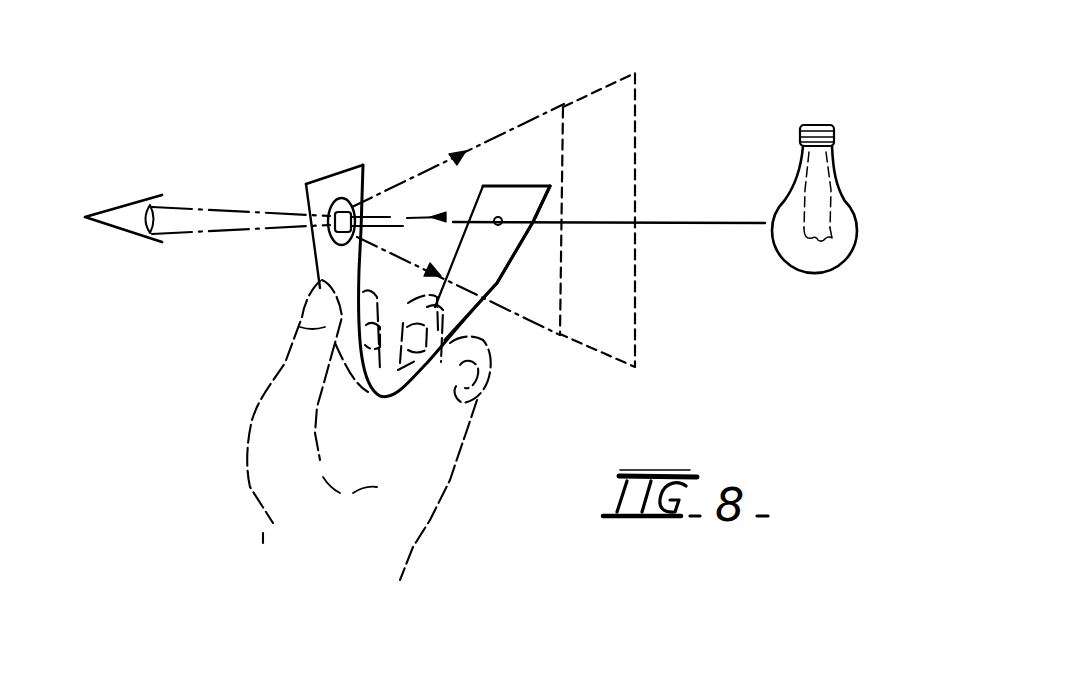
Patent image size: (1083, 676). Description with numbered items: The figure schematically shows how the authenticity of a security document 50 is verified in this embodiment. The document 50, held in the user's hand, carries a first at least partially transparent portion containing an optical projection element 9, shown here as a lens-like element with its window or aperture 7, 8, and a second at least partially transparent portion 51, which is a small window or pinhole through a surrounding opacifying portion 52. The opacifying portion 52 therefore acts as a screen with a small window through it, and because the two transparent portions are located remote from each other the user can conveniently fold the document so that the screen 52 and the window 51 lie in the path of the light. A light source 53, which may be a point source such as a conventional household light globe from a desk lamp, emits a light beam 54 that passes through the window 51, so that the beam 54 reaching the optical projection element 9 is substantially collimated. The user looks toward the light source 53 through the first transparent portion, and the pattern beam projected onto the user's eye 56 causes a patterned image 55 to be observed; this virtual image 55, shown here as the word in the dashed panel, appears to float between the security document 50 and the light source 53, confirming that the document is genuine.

The lens window 7 is at (324, 159).
The lens window 8 is at (340, 198).
The optical projection element 9 is at (298, 166).
The security document 50 is at (358, 175).
The second at least partially transparent portion 51 is at (496, 217).
The surrounding opacifying portion 52 is at (523, 195).
The light source 53 is at (806, 257).
The light beam 54 is at (678, 225).
The patterned image 55 is at (617, 118).
The user's eye 56 is at (133, 222).